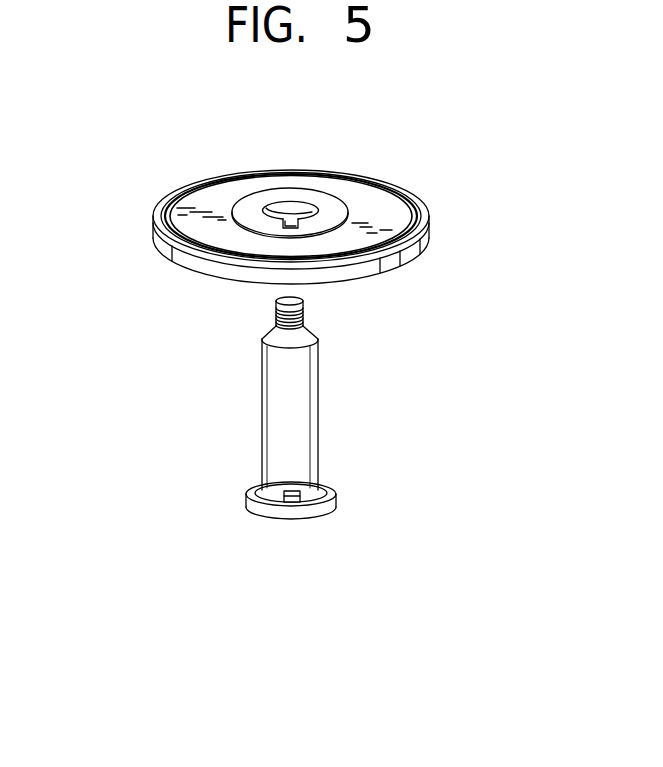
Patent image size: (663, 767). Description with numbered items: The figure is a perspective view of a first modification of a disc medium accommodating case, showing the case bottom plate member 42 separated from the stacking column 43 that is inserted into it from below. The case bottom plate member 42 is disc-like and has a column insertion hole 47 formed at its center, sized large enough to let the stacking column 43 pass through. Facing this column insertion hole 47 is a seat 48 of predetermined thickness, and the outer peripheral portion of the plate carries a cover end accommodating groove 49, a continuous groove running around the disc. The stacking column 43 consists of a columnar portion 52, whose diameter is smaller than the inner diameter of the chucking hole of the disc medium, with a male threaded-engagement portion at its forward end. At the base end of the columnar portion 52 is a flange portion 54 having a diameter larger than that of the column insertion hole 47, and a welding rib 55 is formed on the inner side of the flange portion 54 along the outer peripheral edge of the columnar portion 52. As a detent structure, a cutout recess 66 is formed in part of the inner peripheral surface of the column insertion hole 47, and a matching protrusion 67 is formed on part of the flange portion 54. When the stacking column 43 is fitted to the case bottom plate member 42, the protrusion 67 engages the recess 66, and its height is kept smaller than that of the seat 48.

The case bottom plate member 42 is at (298, 220).
The stacking column 43 is at (306, 418).
The column insertion hole 47 is at (292, 210).
The seat 48 is at (240, 210).
The cover end accommodating groove 49 is at (167, 221).
The columnar portion 52 is at (318, 375).
The flange portion 54 is at (334, 505).
The welding rib 55 is at (251, 487).
The cutout recess 66 is at (285, 227).
The protrusion 67 is at (299, 492).